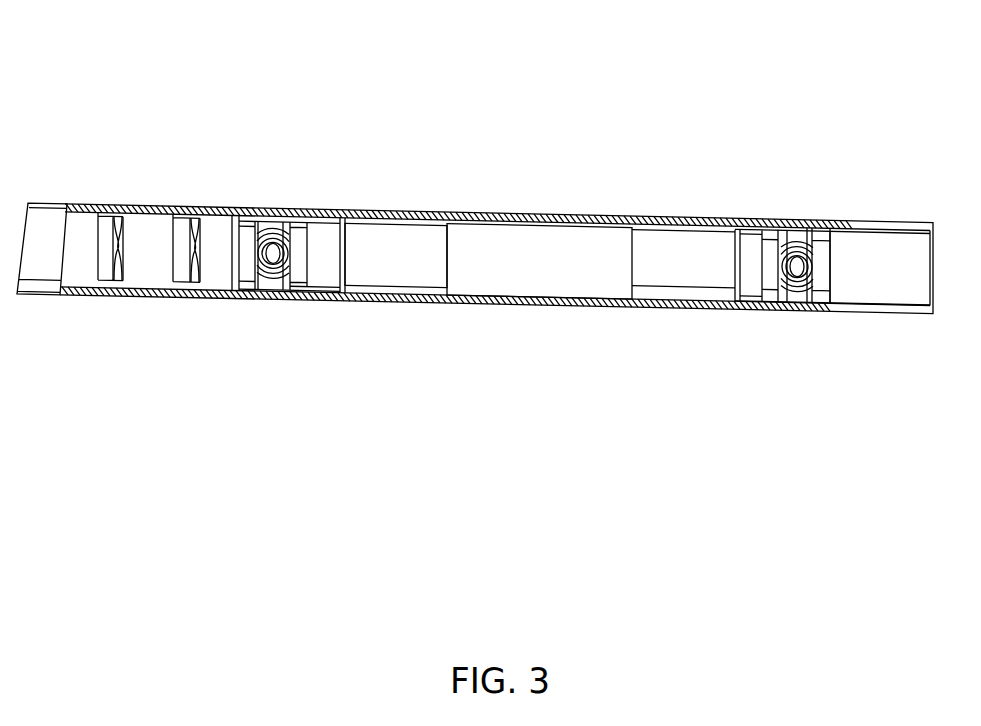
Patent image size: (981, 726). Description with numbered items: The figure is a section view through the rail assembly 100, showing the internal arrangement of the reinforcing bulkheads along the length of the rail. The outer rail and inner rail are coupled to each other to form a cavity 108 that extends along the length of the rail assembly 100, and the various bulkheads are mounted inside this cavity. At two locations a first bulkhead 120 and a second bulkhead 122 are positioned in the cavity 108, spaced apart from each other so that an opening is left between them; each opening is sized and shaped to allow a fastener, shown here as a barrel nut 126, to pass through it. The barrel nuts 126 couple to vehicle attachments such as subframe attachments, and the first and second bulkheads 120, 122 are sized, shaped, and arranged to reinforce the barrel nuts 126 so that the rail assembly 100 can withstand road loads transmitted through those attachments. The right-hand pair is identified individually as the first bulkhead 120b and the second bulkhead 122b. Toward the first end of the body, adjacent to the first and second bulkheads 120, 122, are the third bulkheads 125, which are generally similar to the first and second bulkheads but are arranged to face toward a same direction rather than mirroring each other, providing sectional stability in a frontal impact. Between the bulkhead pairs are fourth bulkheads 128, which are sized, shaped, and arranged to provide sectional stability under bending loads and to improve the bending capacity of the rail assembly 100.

The rail assembly 100 is at (533, 78).
The cavity 108 is at (422, 270).
The first bulkheads 120 is at (247, 300).
The first bulkhead 120b is at (773, 223).
The second bulkheads 122 is at (292, 300).
The second bulkhead 122b is at (822, 229).
The third bulkheads 125 is at (108, 297).
The barrel nut 126 is at (271, 284).
The fourth bulkheads 128 is at (600, 278).